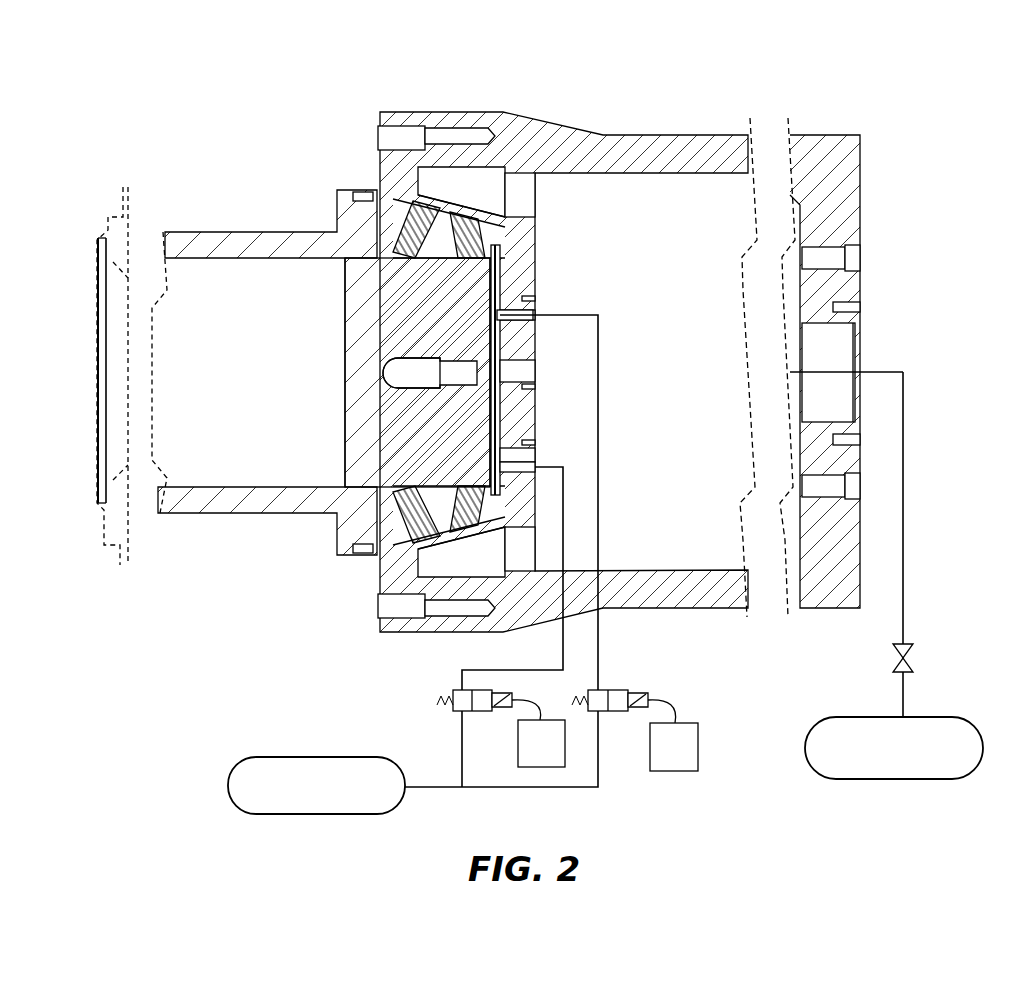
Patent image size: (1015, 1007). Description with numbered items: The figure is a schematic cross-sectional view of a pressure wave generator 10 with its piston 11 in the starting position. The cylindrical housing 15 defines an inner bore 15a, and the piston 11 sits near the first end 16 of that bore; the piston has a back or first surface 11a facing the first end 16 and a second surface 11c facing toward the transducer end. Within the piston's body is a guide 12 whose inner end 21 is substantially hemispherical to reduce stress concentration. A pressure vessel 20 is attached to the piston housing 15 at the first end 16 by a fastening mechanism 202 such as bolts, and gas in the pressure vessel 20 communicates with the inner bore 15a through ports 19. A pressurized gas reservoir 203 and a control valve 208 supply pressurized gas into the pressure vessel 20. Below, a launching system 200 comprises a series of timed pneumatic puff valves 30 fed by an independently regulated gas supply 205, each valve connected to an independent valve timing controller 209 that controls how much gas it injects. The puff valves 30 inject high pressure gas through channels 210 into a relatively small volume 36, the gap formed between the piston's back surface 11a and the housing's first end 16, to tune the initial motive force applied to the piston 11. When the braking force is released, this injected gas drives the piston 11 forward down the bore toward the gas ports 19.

The pressure wave generator 10 is at (753, 97).
The piston 11 is at (373, 271).
The first surface 11a is at (486, 321).
The second surface 11c is at (342, 335).
The guide 12 is at (414, 381).
The housing 15 is at (198, 250).
The inner bore 15a is at (220, 299).
The first end 16 is at (498, 275).
The ports 19 is at (441, 521).
The pressure vessel 20 is at (694, 597).
The inner end 21 is at (382, 373).
The pneumatic (puff) valves 30 is at (457, 708).
The volume 36 is at (494, 293).
The launching system 200 is at (371, 707).
The fastening mechanism 202 is at (386, 134).
The pressurized gas reservoir 203 is at (899, 762).
The gas supply 205 is at (270, 809).
The control valve 208 is at (906, 657).
The valve timing controllers 209 is at (520, 764).
The channels 210 is at (516, 463).